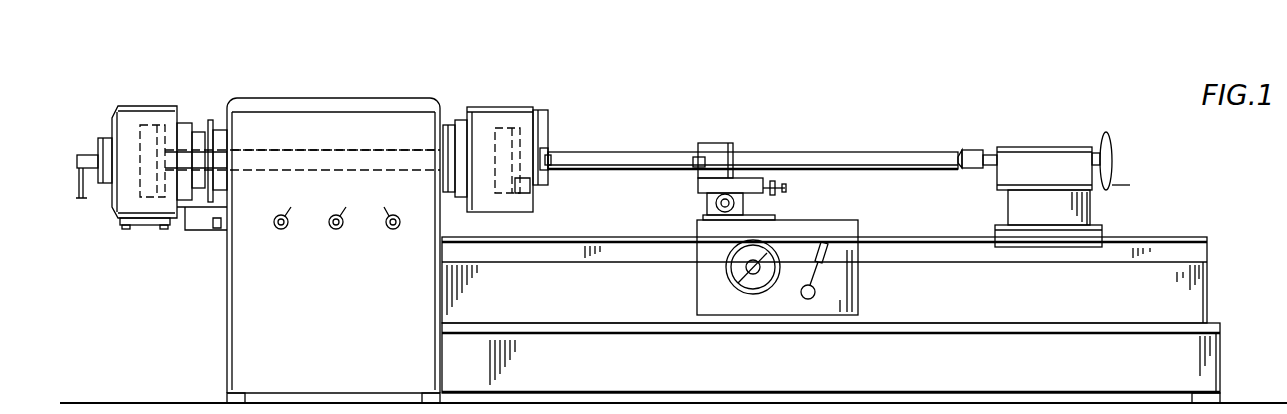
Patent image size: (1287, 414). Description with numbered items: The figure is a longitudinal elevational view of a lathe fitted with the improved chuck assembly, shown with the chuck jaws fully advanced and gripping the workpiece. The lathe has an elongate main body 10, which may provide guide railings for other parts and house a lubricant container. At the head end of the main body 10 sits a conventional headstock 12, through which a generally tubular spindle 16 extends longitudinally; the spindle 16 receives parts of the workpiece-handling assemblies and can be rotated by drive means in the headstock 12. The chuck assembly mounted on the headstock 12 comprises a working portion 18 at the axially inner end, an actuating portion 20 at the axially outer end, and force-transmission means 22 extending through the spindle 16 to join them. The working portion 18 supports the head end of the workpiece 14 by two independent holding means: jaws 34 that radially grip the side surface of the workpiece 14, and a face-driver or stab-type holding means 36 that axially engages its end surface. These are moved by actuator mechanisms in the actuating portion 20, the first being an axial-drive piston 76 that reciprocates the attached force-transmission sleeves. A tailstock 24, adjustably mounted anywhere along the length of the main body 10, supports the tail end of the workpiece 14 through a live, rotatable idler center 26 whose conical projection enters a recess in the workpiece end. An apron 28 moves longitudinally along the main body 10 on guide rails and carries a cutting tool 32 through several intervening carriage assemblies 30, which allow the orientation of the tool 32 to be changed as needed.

The main body 10 is at (1197, 288).
The headstock 12 is at (332, 313).
The workpiece 14 is at (846, 152).
The spindle 16 is at (358, 148).
The working portion 18 is at (510, 90).
The actuating portion 20 is at (151, 95).
The force-transmission means 22 is at (288, 162).
The tailstock 24 is at (1052, 147).
The idler center 26 is at (971, 150).
The apron 28 is at (845, 290).
The carriage assemblies 30 is at (685, 201).
The cutting tool 32 is at (705, 155).
The jaws 34 is at (548, 128).
The stab-type holding means 36 is at (545, 162).
The piston 76 is at (160, 190).